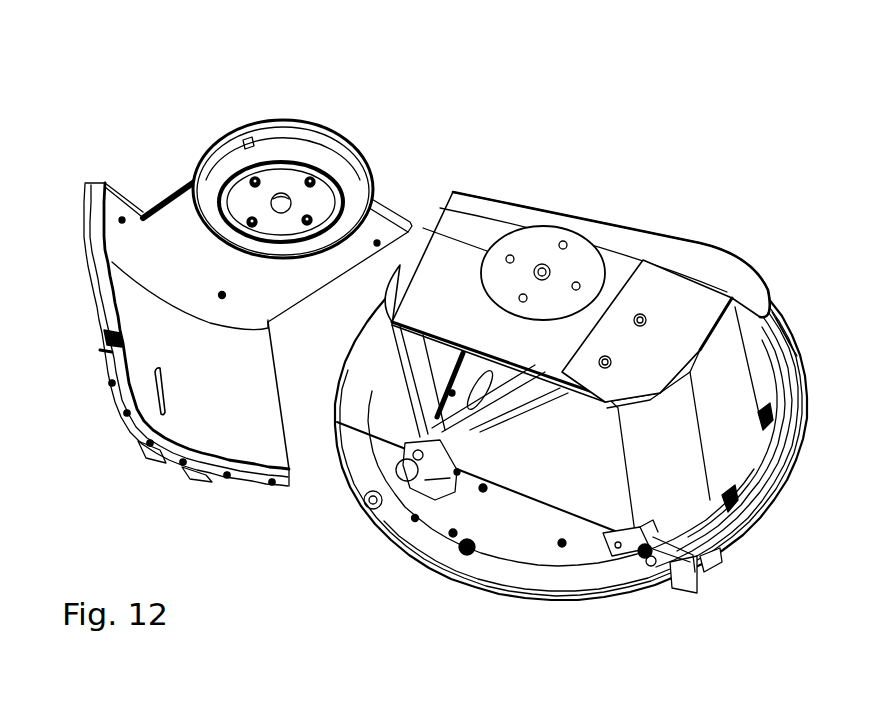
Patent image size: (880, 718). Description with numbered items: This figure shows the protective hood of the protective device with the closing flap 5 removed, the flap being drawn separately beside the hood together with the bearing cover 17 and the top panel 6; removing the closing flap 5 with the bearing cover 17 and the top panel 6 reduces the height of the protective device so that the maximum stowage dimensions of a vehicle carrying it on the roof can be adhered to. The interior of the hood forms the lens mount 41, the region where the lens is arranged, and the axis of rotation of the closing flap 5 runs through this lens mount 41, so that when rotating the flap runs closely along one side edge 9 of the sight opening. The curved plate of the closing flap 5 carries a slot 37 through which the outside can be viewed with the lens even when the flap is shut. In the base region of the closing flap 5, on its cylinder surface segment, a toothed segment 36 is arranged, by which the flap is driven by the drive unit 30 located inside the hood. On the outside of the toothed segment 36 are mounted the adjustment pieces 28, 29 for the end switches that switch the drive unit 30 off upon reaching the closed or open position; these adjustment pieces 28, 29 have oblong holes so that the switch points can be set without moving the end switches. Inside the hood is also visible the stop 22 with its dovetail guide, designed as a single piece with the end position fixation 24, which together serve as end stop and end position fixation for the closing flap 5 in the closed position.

The closing flap 5 is at (165, 230).
The bearing cover 17 is at (268, 122).
The top panel 6 is at (684, 298).
The toothed segment 36 is at (108, 362).
The slot 37 is at (156, 391).
The adjustment piece 28 is at (147, 452).
The adjustment piece 29 is at (187, 475).
The side edge 9 is at (405, 372).
The drive unit 30 is at (400, 493).
The lens mount 41 is at (533, 463).
The stop 22 is at (627, 553).
The end position fixation 24 is at (653, 608).